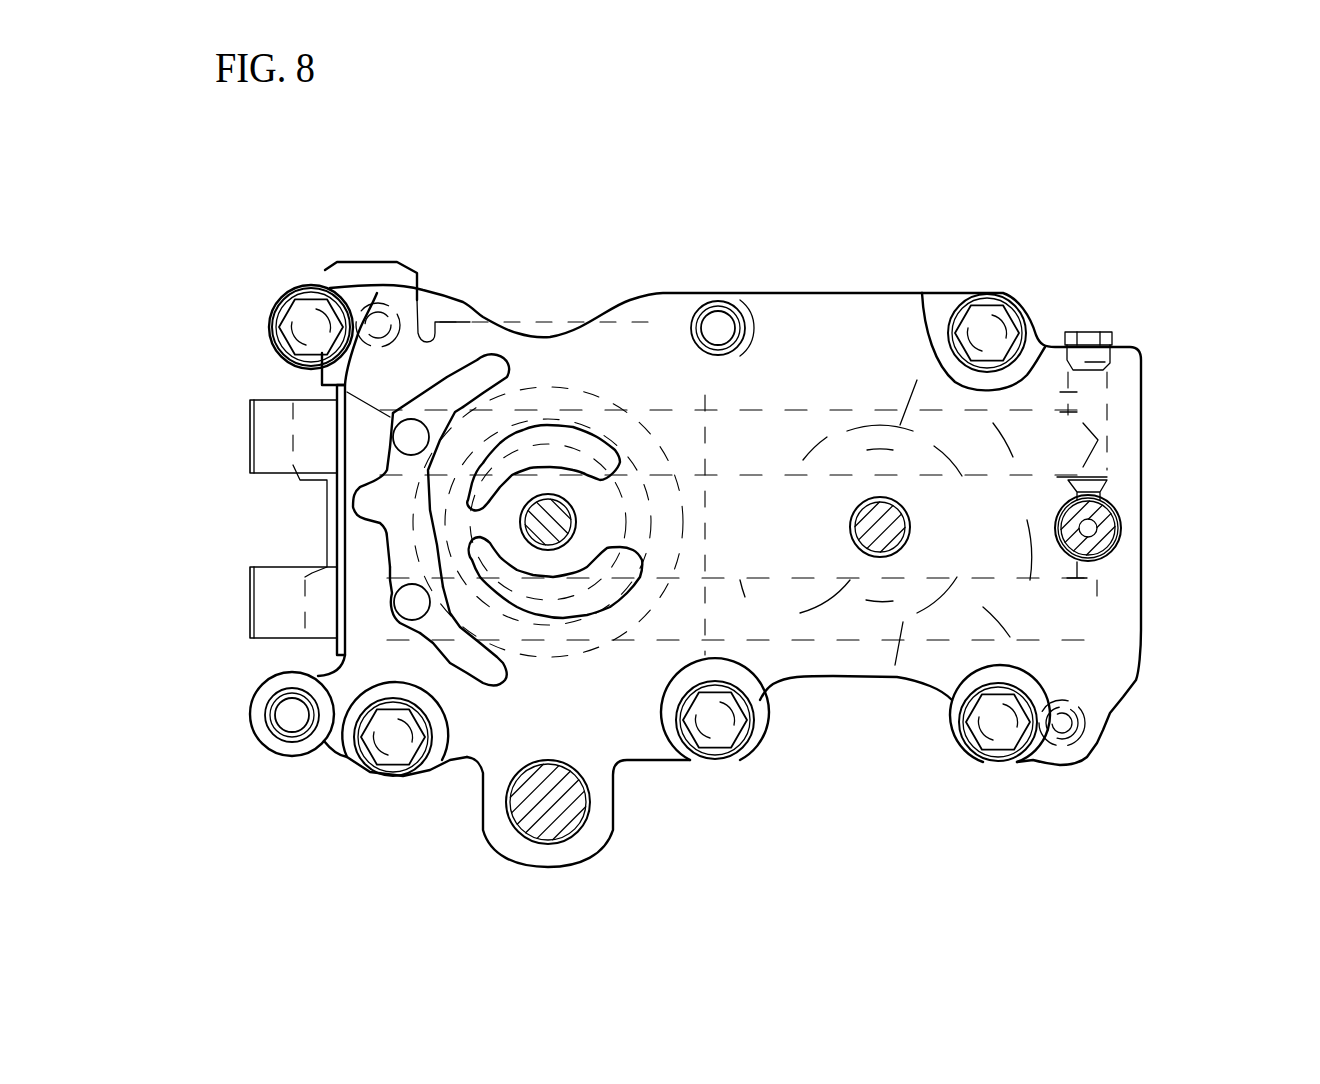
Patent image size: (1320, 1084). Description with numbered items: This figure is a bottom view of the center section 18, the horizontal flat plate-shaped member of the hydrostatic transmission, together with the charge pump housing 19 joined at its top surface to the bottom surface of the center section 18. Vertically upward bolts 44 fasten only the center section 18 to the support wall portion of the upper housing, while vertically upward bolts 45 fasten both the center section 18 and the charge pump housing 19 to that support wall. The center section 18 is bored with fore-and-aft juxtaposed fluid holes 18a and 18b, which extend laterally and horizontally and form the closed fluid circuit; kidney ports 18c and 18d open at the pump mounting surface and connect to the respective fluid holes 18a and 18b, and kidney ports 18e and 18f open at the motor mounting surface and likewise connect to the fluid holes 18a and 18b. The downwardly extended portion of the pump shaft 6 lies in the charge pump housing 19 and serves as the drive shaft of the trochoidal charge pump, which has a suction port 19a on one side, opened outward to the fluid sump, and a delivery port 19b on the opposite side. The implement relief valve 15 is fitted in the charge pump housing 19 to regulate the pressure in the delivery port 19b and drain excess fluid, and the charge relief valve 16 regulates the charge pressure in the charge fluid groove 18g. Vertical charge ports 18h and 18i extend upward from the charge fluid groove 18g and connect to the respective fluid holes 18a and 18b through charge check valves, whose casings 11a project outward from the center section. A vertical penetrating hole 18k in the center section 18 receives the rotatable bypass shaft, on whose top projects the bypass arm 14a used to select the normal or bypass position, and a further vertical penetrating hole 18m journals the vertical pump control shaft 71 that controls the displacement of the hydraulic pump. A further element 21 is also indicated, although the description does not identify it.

The pump shaft 6 is at (540, 523).
The casings 11a is at (262, 443).
The bypass arm 14a is at (1103, 523).
The implement relief valve 15 is at (303, 488).
The charge relief valve 16 is at (345, 262).
The center section 18 is at (1137, 418).
The fluid hole 18a is at (780, 370).
The fluid hole 18b is at (790, 718).
The kidney port 18c is at (605, 335).
The kidney port 18d is at (600, 712).
The kidney port 18e is at (973, 286).
The kidney port 18f is at (885, 690).
The charge fluid groove 18g is at (493, 358).
The vertical charge port 18h is at (392, 432).
The vertical charge port 18i is at (403, 603).
The vertical penetrating hole 18k is at (1120, 548).
The vertical penetrating hole 18m is at (515, 825).
The charge pump housing 19 is at (470, 758).
The suction port 19a is at (620, 553).
The delivery port 19b is at (600, 443).
The counter shaft 21 is at (910, 540).
The bolts 44 is at (310, 320).
The bolts 45 is at (723, 310).
The pump control shaft 71 is at (553, 808).